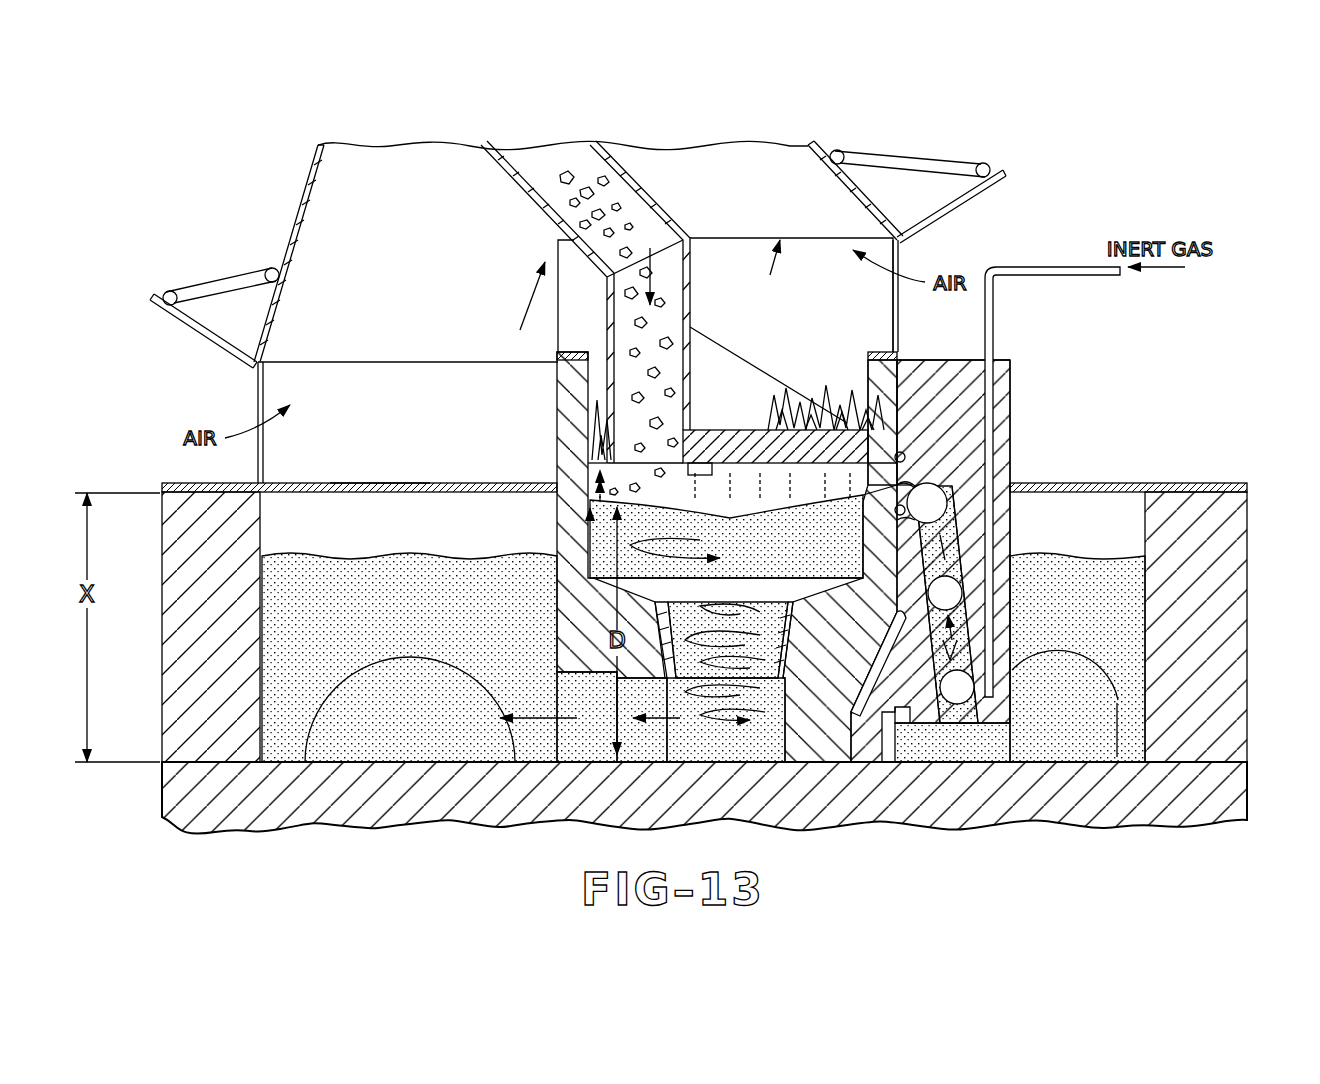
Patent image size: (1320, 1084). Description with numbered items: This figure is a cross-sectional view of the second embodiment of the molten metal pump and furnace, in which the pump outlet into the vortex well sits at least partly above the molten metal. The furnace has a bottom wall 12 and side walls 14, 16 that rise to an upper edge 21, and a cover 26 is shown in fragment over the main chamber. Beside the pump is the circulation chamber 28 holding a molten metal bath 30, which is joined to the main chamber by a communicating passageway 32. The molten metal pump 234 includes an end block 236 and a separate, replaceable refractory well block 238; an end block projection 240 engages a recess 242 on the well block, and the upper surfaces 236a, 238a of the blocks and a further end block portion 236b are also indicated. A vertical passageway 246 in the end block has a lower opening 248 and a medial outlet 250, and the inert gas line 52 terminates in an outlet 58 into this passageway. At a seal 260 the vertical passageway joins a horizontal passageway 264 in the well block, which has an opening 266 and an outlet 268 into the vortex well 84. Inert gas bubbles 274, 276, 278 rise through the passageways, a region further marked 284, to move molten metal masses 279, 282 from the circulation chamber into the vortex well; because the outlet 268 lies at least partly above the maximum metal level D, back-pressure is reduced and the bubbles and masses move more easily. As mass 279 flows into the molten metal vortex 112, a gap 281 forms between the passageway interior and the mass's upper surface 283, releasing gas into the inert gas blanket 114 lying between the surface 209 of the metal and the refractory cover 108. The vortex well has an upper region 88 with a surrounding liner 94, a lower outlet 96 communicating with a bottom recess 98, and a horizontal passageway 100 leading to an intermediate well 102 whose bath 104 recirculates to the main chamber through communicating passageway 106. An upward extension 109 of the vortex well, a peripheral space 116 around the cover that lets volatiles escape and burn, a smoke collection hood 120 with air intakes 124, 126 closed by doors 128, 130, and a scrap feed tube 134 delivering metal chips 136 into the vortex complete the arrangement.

The bottom wall 12 is at (1210, 820).
The side wall 14 is at (160, 678).
The side wall 16 is at (1250, 792).
The upper edge 21 is at (195, 485).
The cover 26 is at (348, 488).
The circulation chamber 28 is at (1120, 520).
The molten metal bath 30 is at (1135, 735).
The communicating passageway 32 is at (1098, 752).
The inert gas line 52 is at (1078, 275).
The inert gas outlet 58 is at (1000, 740).
The vortex well 84 is at (762, 490).
The upper region 88 is at (580, 558).
The liner 94 is at (790, 610).
The lower outlet 96 is at (768, 695).
The bottom recess 98 is at (748, 730).
The horizontal passageway 100 is at (590, 730).
The intermediate well 102 is at (382, 492).
The molten metal bath 104 is at (290, 648).
The communicating passageway 106 is at (318, 716).
The refractory cover 108 is at (722, 445).
The upward extension of the vortex well 109 is at (778, 248).
The molten metal vortex 112 is at (597, 528).
The inert gas blanket 114 is at (785, 485).
The peripheral space 116 is at (595, 470).
The smoke collection hood 120 is at (297, 225).
The air intake 124 is at (258, 388).
The air intake 126 is at (898, 265).
The closure door 128 is at (190, 330).
The closure door 130 is at (955, 205).
The scrap feed tube 134 is at (640, 192).
The metal chips 136 is at (560, 202).
The surface of the molten metal 209 is at (690, 498).
The molten metal pump 234 is at (1015, 370).
The end block 236 is at (1003, 392).
The top surface 236a is at (1008, 362).
The bottom surface 236b is at (955, 705).
The well block 238 is at (897, 375).
The wall top 238a is at (575, 355).
The end block projection 240 is at (940, 735).
The recess 242 is at (880, 700).
The vertical passageway 246 is at (965, 515).
The lower opening 248 is at (962, 722).
The medial outlet 250 is at (915, 470).
The seal 260 is at (910, 510).
The horizontal passageway 264 is at (880, 530).
The opening 266 is at (920, 500).
The outlet 268 is at (870, 508).
The inert gas bubble 274 is at (930, 520).
The inert gas bubble 276 is at (955, 593).
The inert gas bubble 278 is at (960, 687).
The molten metal mass 279 is at (880, 555).
The gap 281 is at (805, 490).
The molten metal mass 282 is at (965, 640).
The upper surface 283 is at (898, 460).
The inert gas flow 284 is at (955, 540).